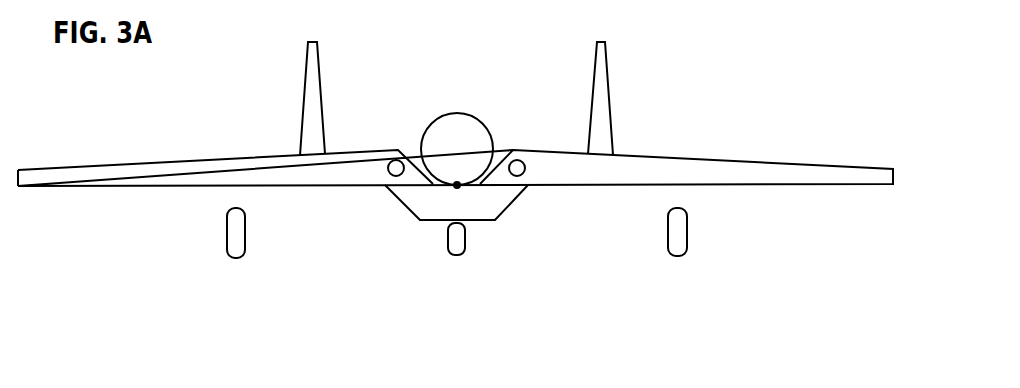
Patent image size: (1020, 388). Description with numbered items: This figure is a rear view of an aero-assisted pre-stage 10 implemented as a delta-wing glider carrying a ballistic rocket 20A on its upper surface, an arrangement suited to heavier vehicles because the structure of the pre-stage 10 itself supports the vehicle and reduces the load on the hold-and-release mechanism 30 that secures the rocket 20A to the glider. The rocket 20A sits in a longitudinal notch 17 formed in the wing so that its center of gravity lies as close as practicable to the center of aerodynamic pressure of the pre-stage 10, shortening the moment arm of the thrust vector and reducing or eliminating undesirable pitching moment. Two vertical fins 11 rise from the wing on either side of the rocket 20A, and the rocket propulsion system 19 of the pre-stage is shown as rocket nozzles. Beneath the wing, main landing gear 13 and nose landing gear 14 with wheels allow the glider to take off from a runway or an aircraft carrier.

The aero-assisted pre-stage 10 is at (755, 162).
The vertical stabilizer 11 is at (320, 78).
The main landing gear 13 is at (227, 233).
The nose landing gear 14 is at (448, 242).
The longitudinal notch 17 is at (407, 161).
The rocket propulsion system 19 is at (403, 163).
The ballistic rocket 20A is at (468, 115).
The hold-and-release mechanism 30 is at (457, 185).